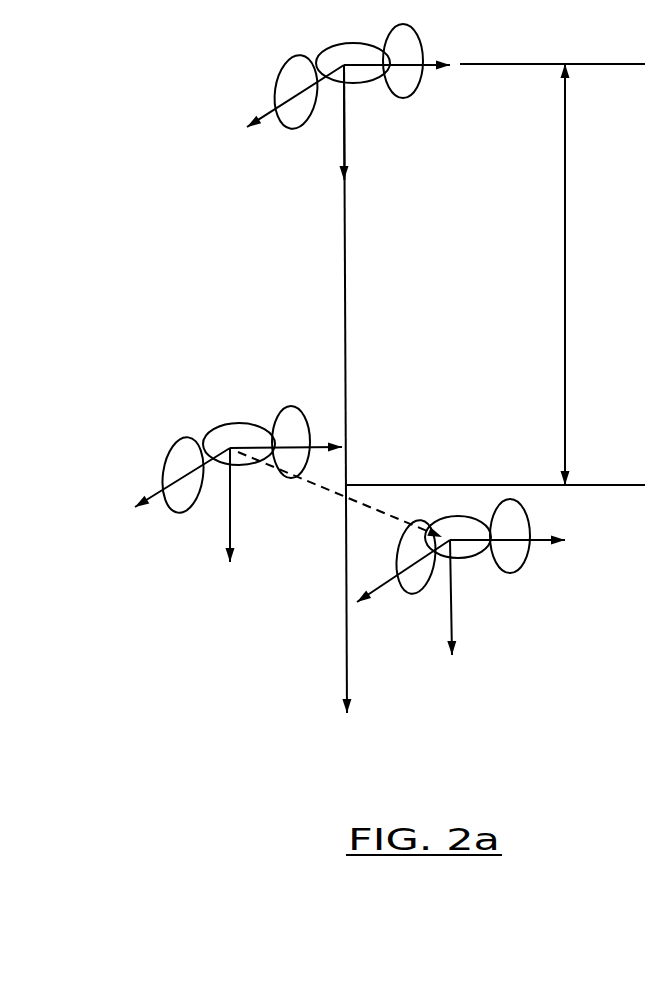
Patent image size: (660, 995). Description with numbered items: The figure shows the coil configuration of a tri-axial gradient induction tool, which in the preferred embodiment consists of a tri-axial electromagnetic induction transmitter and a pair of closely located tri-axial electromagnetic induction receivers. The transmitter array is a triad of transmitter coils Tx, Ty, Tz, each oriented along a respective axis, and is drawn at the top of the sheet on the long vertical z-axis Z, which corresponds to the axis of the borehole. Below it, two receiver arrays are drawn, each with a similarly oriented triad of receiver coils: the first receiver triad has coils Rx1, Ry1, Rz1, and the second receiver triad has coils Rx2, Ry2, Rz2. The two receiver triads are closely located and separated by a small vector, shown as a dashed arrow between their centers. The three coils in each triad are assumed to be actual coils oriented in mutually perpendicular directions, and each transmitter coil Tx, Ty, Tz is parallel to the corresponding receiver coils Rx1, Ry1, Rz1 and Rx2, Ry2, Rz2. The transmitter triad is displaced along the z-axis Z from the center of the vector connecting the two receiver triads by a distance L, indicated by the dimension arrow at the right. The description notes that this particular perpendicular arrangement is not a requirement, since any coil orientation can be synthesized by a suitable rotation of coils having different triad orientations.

The transmitter coil Tx is at (403, 46).
The transmitter coil Ty is at (283, 108).
The transmitter coil Tz is at (359, 128).
The distance L is at (554, 274).
The receiver coil Rx1 is at (286, 408).
The receiver coil Ry1 is at (163, 495).
The receiver coil Rz1 is at (253, 512).
The receiver coil Rx2 is at (525, 538).
The receiver coil Ry2 is at (403, 591).
The receiver coil Rz2 is at (455, 621).
The z-axis Z is at (364, 393).